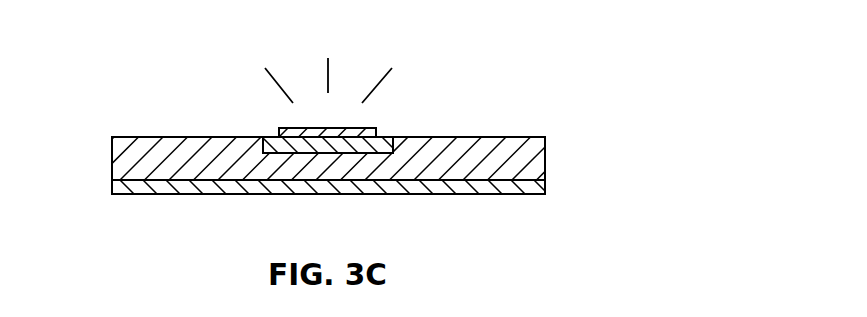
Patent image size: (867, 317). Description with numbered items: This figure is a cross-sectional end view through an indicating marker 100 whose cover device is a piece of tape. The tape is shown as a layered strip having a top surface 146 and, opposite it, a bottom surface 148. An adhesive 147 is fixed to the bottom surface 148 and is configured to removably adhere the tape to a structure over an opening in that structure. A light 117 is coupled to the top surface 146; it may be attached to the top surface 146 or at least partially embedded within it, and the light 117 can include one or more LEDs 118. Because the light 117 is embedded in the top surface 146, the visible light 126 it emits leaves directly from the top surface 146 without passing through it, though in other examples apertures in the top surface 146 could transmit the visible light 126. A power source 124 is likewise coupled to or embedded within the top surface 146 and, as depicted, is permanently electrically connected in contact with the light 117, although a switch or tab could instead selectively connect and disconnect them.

The sensor assembly 100 is at (495, 90).
The light 117 is at (347, 122).
The LED 118 is at (298, 128).
The power source 124 is at (376, 145).
The visible light 126 is at (335, 67).
The top surface 146 is at (210, 137).
The adhesive 147 is at (290, 182).
The bottom surface 148 is at (206, 184).